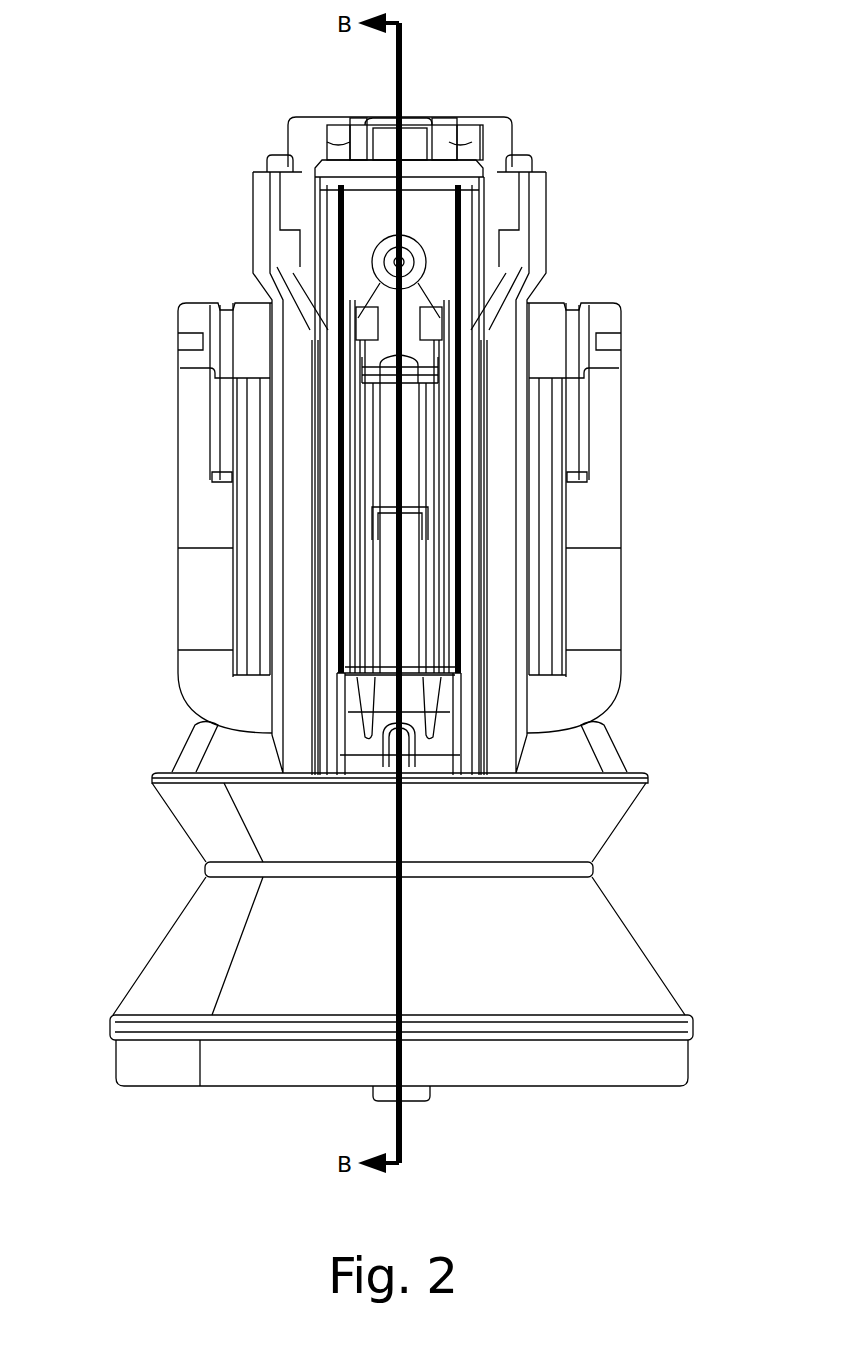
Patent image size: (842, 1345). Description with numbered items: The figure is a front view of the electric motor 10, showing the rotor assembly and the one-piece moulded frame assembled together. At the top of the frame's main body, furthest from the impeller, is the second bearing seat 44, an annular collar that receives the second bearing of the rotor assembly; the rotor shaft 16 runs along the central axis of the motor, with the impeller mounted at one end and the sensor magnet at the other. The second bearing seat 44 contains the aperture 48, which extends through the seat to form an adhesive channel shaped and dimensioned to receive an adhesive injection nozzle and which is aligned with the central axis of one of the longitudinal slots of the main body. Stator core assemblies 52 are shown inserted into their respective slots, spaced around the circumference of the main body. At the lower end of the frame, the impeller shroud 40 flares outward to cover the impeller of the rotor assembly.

The electric motor 10 is at (150, 162).
The shaft 16 is at (395, 122).
The second bearing seat 44 is at (362, 232).
The aperture 48 is at (410, 260).
The stator core assemblies 52 is at (192, 470).
The impeller shroud 40 is at (177, 951).